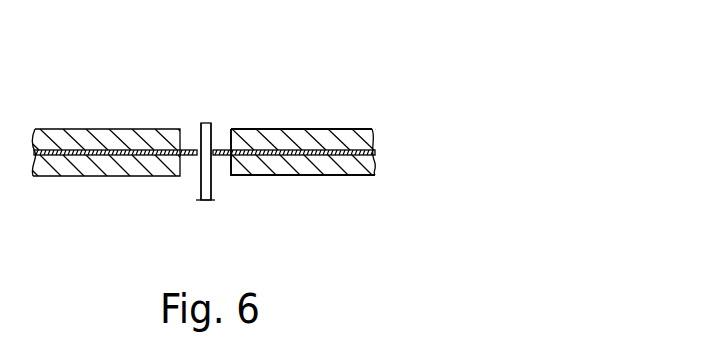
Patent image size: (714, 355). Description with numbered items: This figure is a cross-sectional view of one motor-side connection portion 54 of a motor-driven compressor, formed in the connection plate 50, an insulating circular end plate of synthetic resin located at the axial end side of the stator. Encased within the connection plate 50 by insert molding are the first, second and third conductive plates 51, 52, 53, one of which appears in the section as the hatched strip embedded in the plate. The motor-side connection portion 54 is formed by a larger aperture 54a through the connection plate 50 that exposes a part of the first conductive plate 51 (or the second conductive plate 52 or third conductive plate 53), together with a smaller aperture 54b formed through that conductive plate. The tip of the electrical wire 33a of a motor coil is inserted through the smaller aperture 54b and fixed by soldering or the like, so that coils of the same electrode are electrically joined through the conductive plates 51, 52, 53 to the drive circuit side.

The connection plate 50 is at (70, 130).
The electrical wire 33a is at (200, 183).
The motor-side connection portion 54 is at (212, 107).
The larger aperture 54a is at (193, 133).
The smaller aperture 54b is at (218, 128).
The first conductive plate 51 is at (304, 157).
The second conductive plate 52 is at (303, 152).
The third conductive plate 53 is at (303, 152).